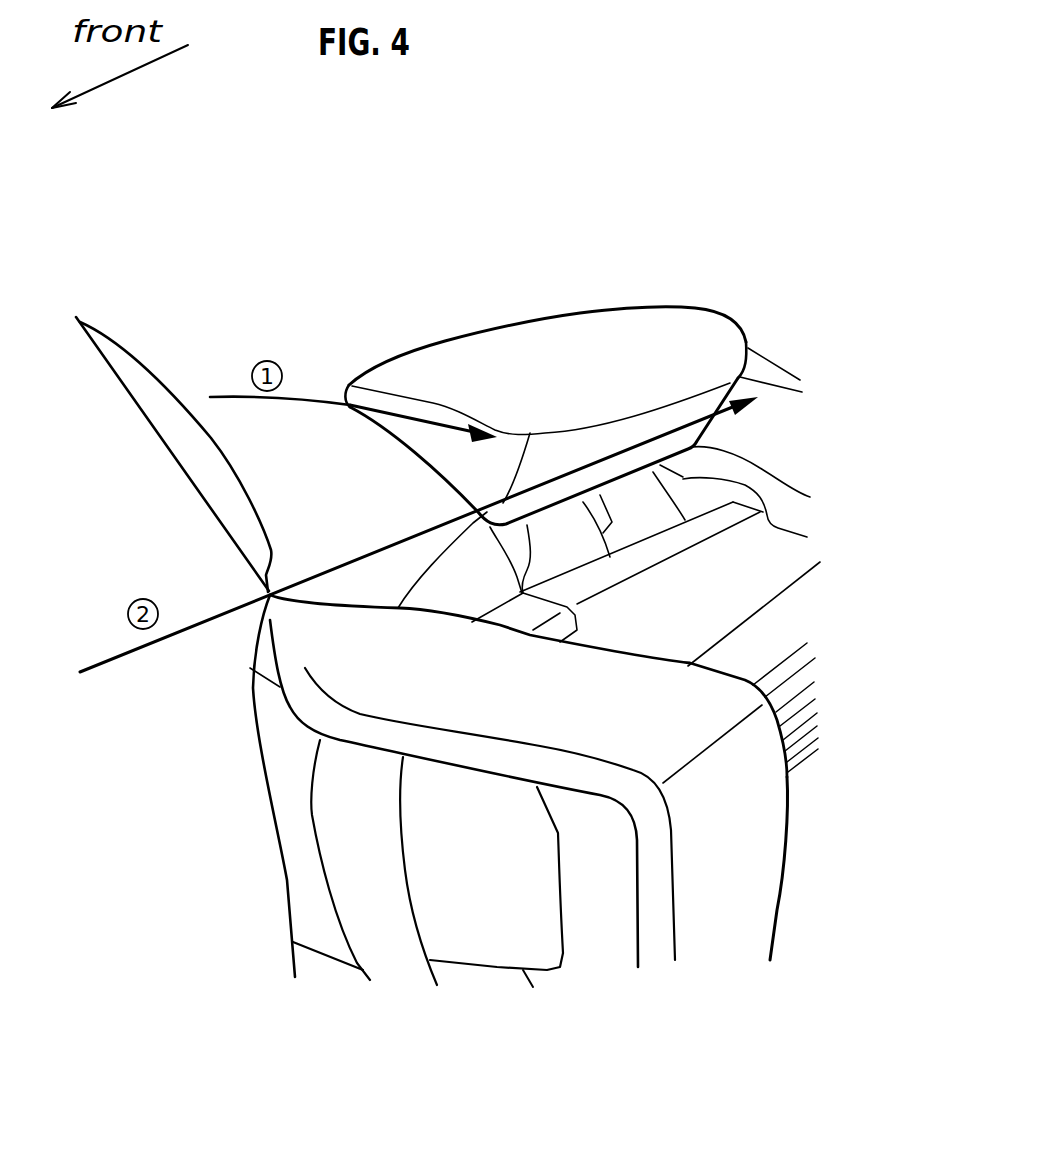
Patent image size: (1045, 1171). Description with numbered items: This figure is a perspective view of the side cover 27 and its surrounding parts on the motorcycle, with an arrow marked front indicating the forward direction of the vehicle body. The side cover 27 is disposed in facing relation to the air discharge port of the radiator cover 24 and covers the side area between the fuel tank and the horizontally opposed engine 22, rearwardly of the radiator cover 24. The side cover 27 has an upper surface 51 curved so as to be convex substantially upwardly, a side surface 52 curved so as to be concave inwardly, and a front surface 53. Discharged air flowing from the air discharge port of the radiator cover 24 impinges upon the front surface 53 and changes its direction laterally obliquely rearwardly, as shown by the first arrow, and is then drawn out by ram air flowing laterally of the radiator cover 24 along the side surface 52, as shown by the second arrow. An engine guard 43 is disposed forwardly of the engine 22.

The radiator cover 24 is at (127, 351).
The side cover 27 is at (679, 309).
The upper surface 51 is at (560, 335).
The front surface 53 is at (387, 400).
The side surface 52 is at (632, 460).
The horizontally opposed engine 22 is at (765, 635).
The engine guard 43 is at (755, 840).